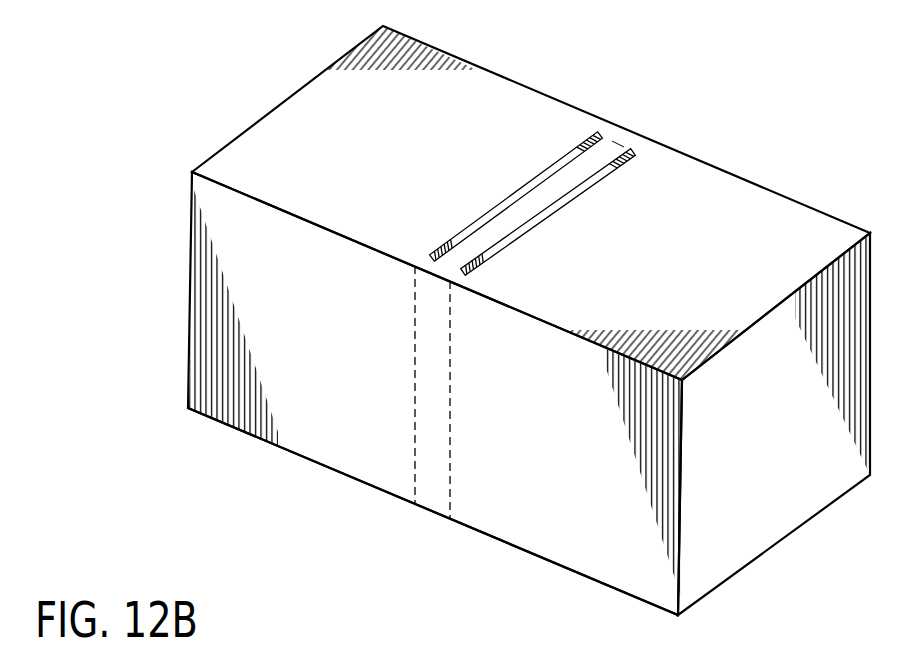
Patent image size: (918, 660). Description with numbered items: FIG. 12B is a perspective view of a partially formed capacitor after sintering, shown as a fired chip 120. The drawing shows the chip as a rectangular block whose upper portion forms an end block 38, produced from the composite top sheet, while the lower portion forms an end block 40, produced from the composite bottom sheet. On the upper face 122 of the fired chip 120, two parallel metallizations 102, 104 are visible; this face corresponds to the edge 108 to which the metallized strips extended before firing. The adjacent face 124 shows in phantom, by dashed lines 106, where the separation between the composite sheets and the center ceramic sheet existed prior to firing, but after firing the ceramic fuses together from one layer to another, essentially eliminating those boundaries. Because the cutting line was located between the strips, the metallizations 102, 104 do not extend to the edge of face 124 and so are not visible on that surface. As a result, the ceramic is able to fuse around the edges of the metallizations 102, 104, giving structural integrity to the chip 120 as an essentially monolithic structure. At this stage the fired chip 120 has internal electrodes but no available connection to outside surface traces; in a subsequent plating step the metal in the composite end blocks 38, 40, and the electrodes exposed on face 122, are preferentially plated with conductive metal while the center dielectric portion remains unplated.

The fired chip 120 is at (125, 292).
The end block 38 is at (264, 110).
The face 122 is at (744, 266).
The adjacent face 124 is at (329, 333).
The fold lines 106 is at (430, 512).
The metallization 102 is at (512, 196).
The metallization 104 is at (634, 152).
The edge 108 is at (614, 136).
The end block 40 is at (581, 582).